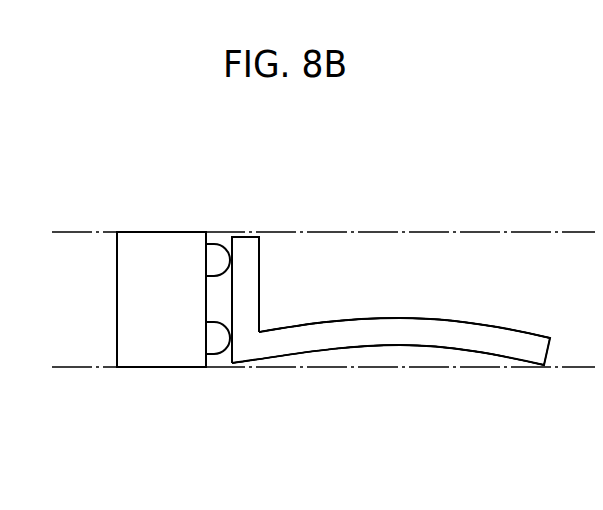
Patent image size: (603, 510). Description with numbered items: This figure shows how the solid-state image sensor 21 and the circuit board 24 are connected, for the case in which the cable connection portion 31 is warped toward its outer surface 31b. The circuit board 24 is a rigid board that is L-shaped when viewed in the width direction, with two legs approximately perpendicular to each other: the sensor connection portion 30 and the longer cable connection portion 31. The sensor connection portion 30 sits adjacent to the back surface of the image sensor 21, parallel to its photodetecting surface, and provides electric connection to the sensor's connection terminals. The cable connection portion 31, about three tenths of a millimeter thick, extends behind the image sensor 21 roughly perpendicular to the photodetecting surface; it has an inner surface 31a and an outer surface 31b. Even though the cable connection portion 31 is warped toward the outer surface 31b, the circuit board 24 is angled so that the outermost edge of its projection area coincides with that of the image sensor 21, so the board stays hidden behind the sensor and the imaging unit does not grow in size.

The image sensor 21 is at (117, 298).
The sensor connection portion 30 is at (247, 248).
The circuit board 24 is at (371, 293).
The cable connection portion 31 is at (537, 345).
The inner surface 31a is at (487, 325).
The outer surface 31b is at (480, 350).